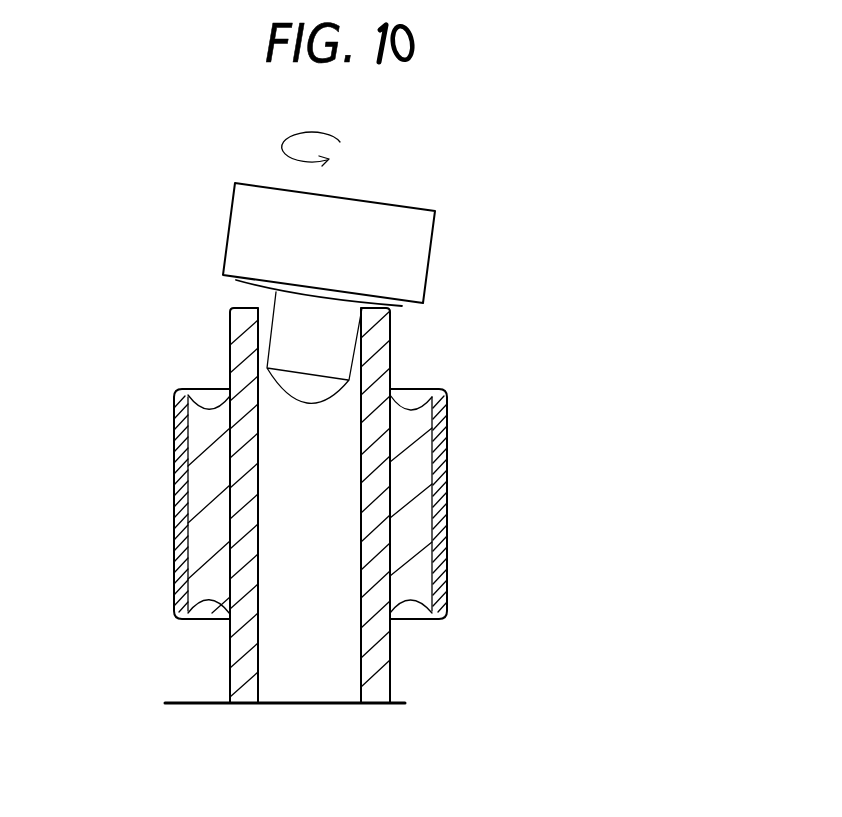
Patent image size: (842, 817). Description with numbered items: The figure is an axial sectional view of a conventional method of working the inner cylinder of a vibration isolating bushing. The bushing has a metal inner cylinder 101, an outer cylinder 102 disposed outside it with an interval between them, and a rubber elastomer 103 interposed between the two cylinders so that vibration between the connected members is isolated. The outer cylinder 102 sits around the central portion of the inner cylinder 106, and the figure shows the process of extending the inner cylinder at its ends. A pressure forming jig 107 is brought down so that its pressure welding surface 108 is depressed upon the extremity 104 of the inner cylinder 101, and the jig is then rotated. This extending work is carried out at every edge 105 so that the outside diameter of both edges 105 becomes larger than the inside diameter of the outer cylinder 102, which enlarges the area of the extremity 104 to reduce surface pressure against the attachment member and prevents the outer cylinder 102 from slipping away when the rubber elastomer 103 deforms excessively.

The inner cylinder 101 is at (383, 543).
The outer cylinder 102 is at (76, 452).
The rubber elastomer 103 is at (418, 477).
The extremity 104 is at (134, 245).
The edge 105 is at (385, 328).
The central portion of the inner cylinder 106 is at (28, 532).
The pressure forming jig 107 is at (422, 232).
The pressure welding surface 108 is at (337, 297).